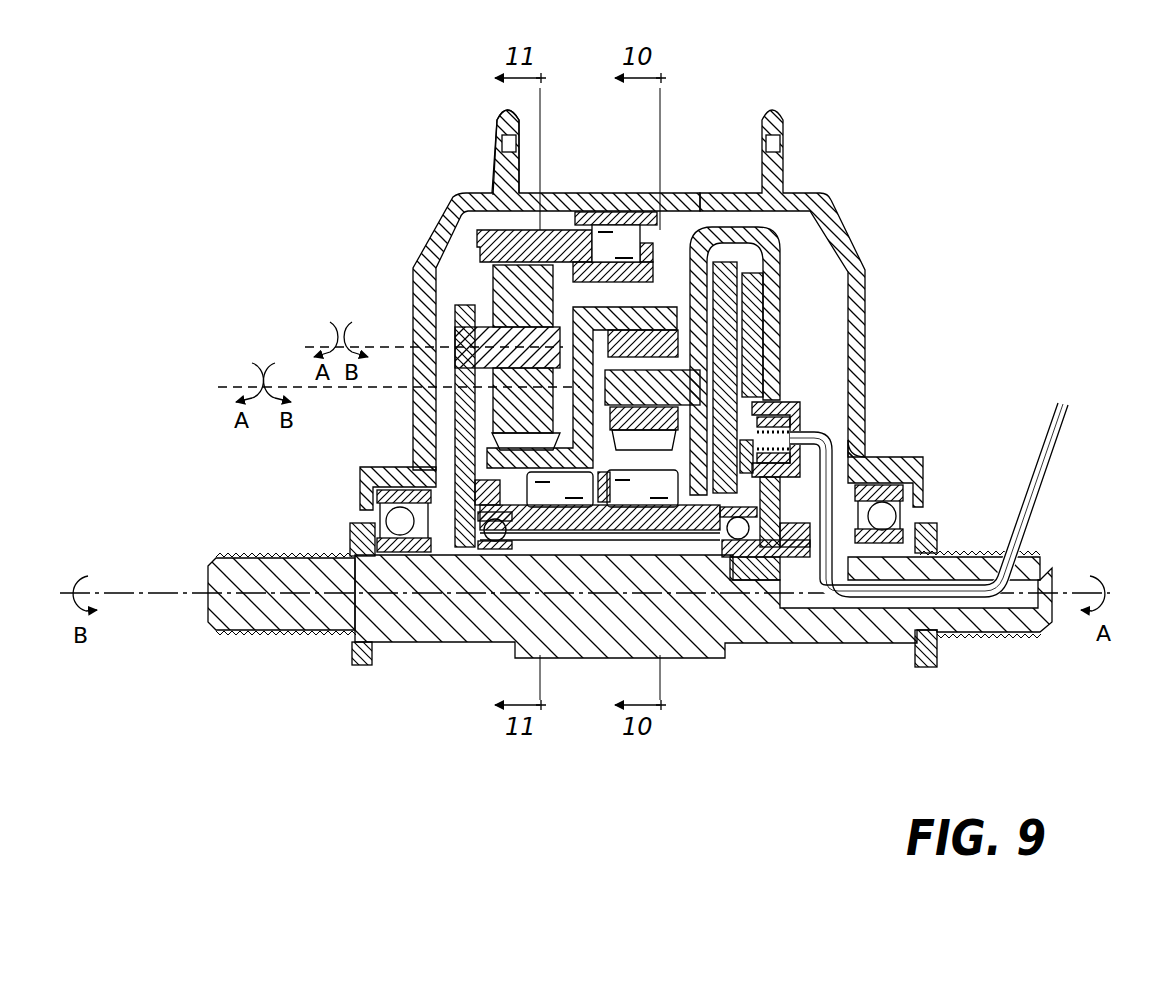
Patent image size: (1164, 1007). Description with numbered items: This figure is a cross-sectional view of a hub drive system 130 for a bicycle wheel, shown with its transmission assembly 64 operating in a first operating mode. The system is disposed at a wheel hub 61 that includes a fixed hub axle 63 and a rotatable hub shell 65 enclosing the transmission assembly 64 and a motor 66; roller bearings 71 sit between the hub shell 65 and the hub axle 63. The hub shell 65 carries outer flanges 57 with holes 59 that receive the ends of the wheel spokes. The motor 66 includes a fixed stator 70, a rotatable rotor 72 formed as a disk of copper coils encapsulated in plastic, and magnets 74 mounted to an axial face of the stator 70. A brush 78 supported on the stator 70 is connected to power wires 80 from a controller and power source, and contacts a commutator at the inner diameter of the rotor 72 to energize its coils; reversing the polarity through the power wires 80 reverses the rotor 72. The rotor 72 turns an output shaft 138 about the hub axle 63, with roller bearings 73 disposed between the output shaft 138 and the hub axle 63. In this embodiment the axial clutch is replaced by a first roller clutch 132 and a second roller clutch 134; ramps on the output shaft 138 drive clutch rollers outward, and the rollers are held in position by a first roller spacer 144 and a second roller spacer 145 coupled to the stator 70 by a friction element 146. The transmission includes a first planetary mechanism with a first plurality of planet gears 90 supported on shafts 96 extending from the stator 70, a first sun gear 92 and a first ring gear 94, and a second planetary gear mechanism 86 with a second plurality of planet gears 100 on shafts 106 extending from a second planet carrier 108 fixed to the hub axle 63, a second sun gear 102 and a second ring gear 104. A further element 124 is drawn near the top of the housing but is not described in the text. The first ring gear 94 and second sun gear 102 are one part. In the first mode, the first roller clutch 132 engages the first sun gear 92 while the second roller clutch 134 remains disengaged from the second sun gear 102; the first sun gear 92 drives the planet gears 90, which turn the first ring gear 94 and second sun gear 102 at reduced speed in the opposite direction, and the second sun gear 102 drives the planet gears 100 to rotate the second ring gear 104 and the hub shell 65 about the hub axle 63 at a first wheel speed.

The outer flanges 57 is at (492, 120).
The holes 59 is at (500, 145).
The wheel hub 61 is at (975, 152).
The fixed hub axle 63 is at (978, 633).
The transmission assembly 64 is at (392, 256).
The rotatable hub shell 65 is at (833, 200).
The motor 66 is at (778, 241).
The fixed stator 70 is at (814, 260).
The roller bearings 71 is at (400, 530).
The rotatable rotor 72 is at (730, 337).
The roller bearings 73 is at (490, 540).
The magnets 74 is at (782, 300).
The brush 78 is at (843, 428).
The power wires 80 is at (1045, 507).
The second planetary gear mechanism 86 is at (470, 276).
The first plurality of planet gears 90 is at (757, 366).
The first sun gear 92 is at (748, 535).
The first ring gear 94 is at (673, 307).
The shafts 96 is at (618, 372).
The second plurality of planet gears 100 is at (425, 308).
The second sun gear 102 is at (428, 452).
The second ring gear 104 is at (498, 240).
The shafts 106 is at (417, 335).
The second planet carrier 108 is at (360, 550).
The plate 124 is at (634, 226).
The hub drive system 130 is at (882, 262).
The first roller clutch 132 is at (640, 490).
The second roller clutch 134 is at (563, 500).
The output shaft 138 is at (715, 545).
The first roller spacer 144 is at (373, 483).
The second roller spacer 145 is at (592, 520).
The friction element 146 is at (782, 400).